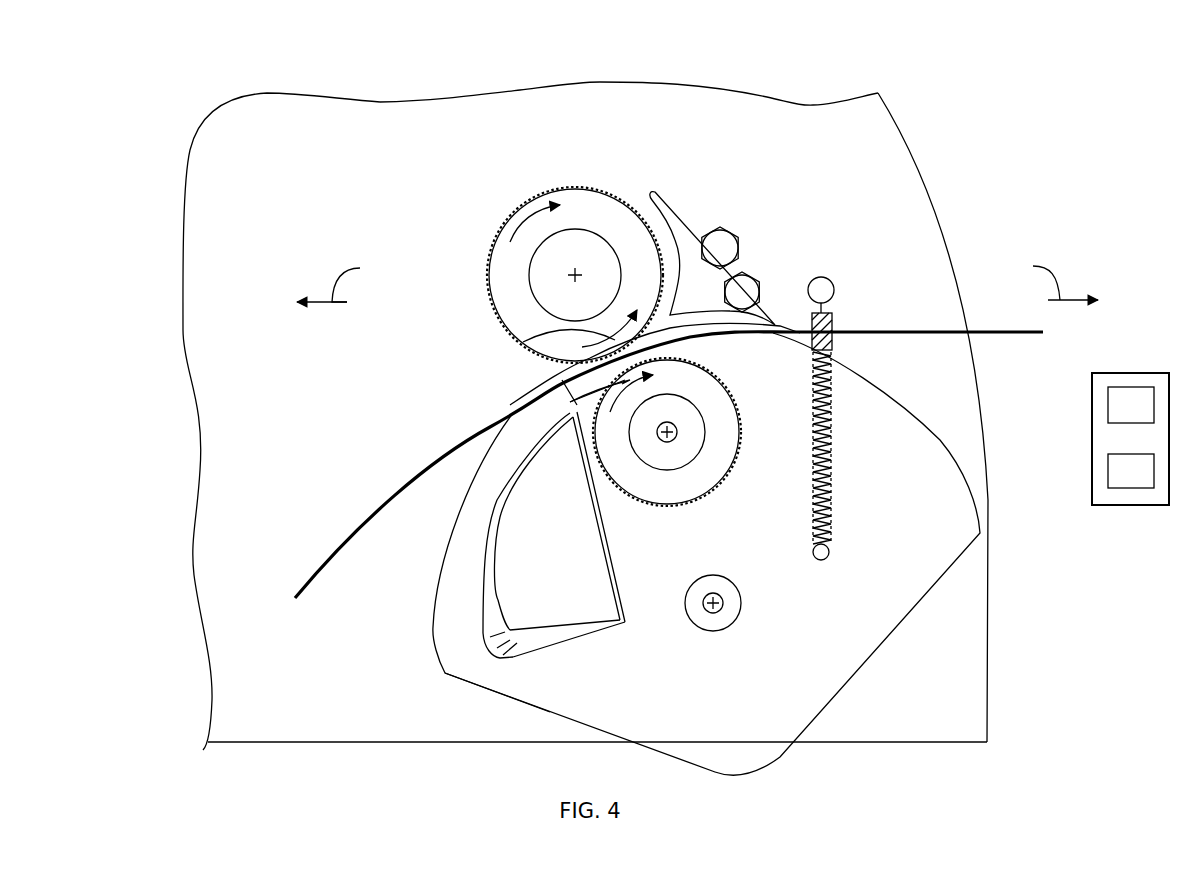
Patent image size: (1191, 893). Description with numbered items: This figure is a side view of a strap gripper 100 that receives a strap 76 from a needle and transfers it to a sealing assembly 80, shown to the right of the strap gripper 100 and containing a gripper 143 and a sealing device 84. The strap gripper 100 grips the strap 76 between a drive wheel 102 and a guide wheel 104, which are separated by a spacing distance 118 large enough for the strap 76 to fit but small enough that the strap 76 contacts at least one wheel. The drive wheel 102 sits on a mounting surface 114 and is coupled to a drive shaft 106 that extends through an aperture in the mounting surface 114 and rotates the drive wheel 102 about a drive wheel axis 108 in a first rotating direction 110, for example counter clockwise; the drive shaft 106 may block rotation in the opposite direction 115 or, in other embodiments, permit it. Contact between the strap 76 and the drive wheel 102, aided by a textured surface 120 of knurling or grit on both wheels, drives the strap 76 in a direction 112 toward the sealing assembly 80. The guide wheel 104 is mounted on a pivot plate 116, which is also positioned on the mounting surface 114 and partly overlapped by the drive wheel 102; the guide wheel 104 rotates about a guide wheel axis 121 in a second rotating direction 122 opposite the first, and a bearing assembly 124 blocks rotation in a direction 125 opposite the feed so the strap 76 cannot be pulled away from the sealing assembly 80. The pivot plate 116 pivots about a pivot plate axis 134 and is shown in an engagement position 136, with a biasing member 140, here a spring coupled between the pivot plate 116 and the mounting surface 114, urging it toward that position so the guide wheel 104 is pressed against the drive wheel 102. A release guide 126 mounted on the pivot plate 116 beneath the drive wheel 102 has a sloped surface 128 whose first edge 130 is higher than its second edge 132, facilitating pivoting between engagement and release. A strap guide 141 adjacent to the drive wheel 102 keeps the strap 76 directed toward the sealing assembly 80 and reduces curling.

The strap 76 is at (362, 523).
The sealing assembly 80 is at (1110, 522).
The sealing device 84 is at (1131, 471).
The strap gripper 100 is at (357, 203).
The drive wheel 102 is at (578, 187).
The guide wheel 104 is at (697, 497).
The drive shaft 106 is at (530, 275).
The drive wheel axis 108 is at (580, 273).
The first rotating direction 110 is at (523, 342).
The direction 112 is at (1047, 277).
The mounting surface 114 is at (637, 80).
The opposite direction 115 is at (527, 217).
The pivot plate 116 is at (897, 633).
The spacing distance 118 is at (545, 398).
The textured surface 120 is at (660, 295).
The guide wheel axis 121 is at (673, 437).
The second rotating direction 122 is at (630, 393).
The bearing assembly 124 is at (643, 455).
The direction 125 is at (348, 278).
The release guide 126 is at (527, 655).
The sloped surface 128 is at (557, 610).
The first edge 130 is at (493, 613).
The second edge 132 is at (610, 570).
The pivot plate axis 134 is at (718, 605).
The engagement position 136 is at (497, 705).
The biasing member 140 is at (832, 445).
The strap guide 141 is at (698, 213).
The gripper 143 is at (1131, 405).